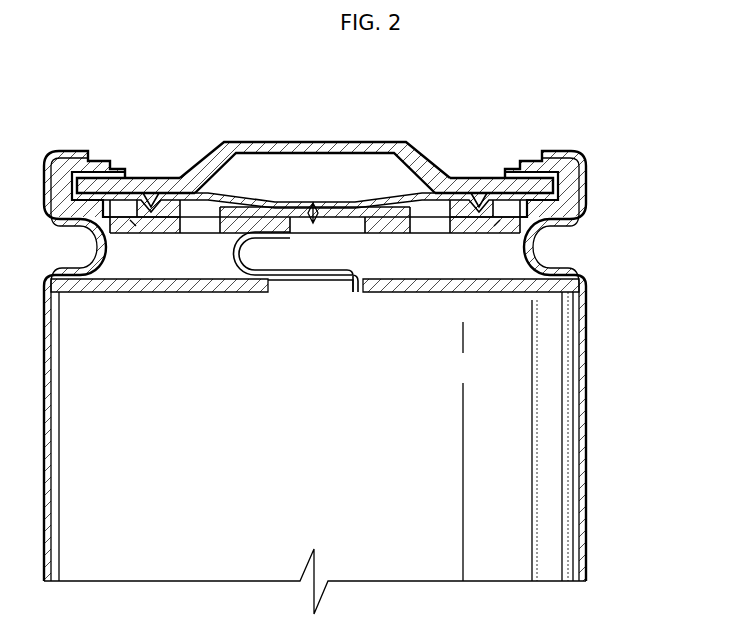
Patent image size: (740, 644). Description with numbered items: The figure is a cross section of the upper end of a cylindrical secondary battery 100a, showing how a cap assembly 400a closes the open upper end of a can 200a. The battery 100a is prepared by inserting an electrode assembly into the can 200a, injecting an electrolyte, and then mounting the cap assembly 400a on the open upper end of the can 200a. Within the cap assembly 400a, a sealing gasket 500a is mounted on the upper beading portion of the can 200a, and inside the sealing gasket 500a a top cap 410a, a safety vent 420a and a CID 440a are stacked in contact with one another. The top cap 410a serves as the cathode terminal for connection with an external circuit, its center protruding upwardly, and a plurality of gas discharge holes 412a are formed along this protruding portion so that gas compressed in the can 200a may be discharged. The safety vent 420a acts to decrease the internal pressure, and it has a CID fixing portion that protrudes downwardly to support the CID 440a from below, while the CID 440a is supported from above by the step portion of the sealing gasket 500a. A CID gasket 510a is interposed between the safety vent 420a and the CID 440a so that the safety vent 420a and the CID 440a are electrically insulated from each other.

The cylindrical secondary battery 100a is at (170, 94).
The can 200a is at (586, 404).
The cap assembly 400a is at (652, 130).
The top cap 410a is at (365, 157).
The gas discharge holes 412a is at (427, 157).
The safety vent 420a is at (570, 171).
The CID 440a is at (548, 226).
The sealing gasket 500a is at (581, 156).
The CID gasket 510a is at (515, 203).